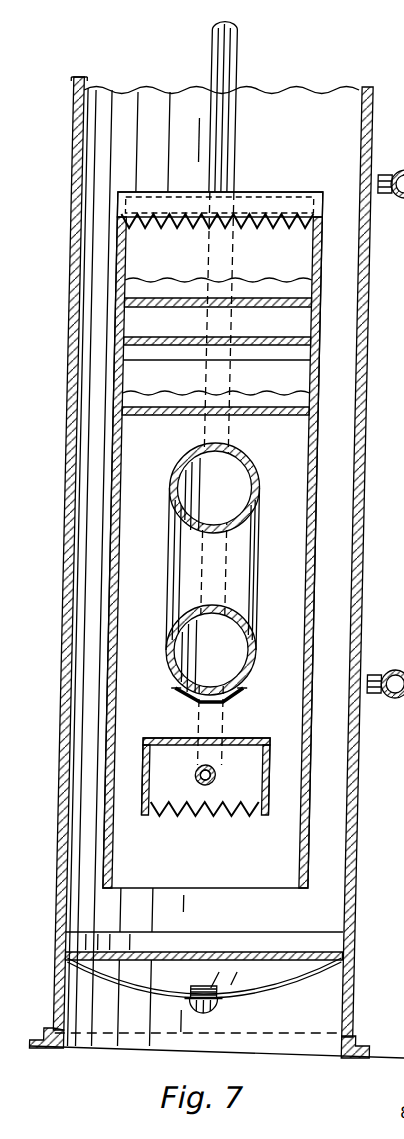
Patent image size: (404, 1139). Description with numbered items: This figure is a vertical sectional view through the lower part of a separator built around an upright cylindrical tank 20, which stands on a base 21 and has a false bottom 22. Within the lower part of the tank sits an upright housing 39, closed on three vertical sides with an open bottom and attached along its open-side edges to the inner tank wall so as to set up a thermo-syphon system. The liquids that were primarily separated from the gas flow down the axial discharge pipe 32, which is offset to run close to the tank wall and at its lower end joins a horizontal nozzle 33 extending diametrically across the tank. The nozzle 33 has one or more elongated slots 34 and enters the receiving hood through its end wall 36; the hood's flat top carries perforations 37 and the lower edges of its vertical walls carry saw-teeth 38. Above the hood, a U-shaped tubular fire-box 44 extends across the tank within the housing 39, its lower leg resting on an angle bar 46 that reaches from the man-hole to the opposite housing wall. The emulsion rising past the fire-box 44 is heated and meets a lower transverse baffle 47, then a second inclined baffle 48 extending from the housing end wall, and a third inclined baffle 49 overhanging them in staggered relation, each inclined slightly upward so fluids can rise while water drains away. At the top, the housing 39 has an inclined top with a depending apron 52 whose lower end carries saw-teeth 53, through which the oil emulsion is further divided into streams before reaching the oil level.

The tank 20 is at (373, 527).
The base 21 is at (382, 1043).
The false bottom 22 is at (281, 983).
The axial discharge pipe 32 is at (225, 135).
The horizontal nozzle 33 is at (230, 783).
The elongated slots 34 is at (214, 773).
The end wall of hood 36 is at (160, 760).
The perforations 37 is at (199, 737).
The saw-teeth 38 is at (198, 812).
The upright housing 39 is at (125, 577).
The U-shaped tubular fire-box 44 is at (244, 562).
The angle bar 46 is at (250, 690).
The lower transverse baffle 47 is at (150, 402).
The second inclined baffle 48 is at (155, 350).
The third inclined baffle 49 is at (166, 290).
The depending apron 52 is at (279, 208).
The saw-teeth 53 is at (267, 222).